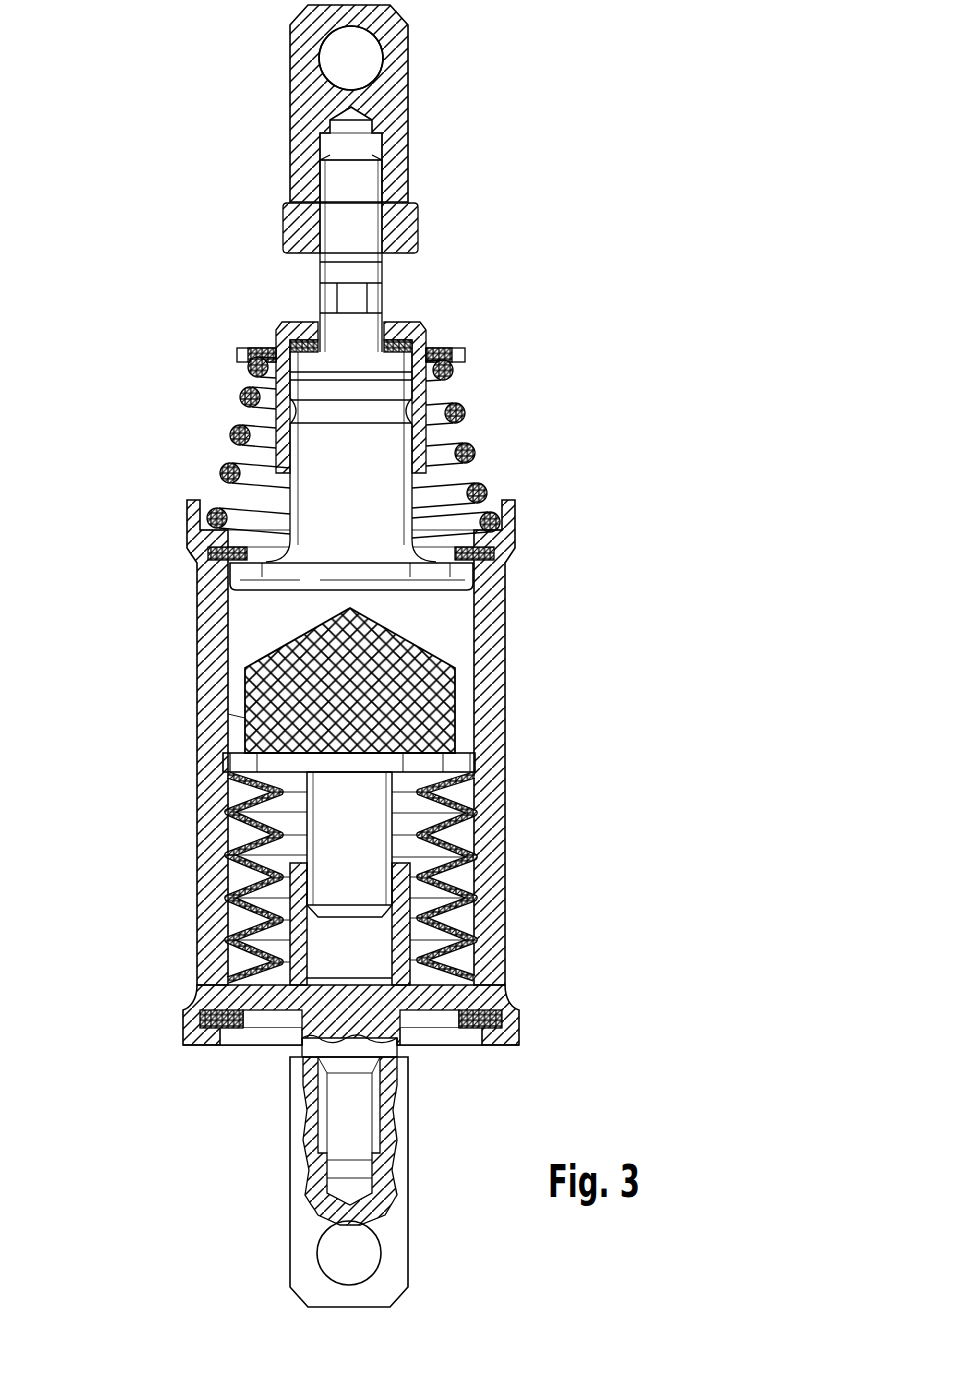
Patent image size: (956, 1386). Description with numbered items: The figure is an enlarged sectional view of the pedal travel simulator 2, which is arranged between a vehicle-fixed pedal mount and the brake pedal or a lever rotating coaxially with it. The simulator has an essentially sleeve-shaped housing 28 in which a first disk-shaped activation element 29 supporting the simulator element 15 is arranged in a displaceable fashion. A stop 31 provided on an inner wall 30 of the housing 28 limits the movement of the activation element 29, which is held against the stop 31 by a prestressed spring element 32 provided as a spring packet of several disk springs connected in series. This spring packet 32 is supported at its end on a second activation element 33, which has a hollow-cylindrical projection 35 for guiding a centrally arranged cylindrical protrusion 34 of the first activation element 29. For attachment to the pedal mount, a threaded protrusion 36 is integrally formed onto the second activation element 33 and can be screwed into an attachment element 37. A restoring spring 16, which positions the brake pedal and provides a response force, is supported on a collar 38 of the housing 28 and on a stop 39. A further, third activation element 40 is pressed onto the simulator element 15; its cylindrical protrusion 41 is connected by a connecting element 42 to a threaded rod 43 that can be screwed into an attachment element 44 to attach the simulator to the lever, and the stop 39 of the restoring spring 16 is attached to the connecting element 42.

The pedal travel simulator 2 is at (190, 195).
The simulator element 15 is at (420, 693).
The restoring spring 16 is at (480, 451).
The housing 28 is at (496, 824).
The first activation element 29 is at (466, 766).
The inner wall 30 is at (455, 622).
The stop 31 is at (226, 765).
The spring element 32 is at (440, 879).
The second activation element 33 is at (446, 999).
The cylindrical protrusion 34 is at (326, 848).
The hollow-cylindrical projection 35 is at (300, 931).
The threaded protrusion 36 is at (342, 1119).
The attachment element 37 is at (310, 1231).
The collar 38 is at (478, 539).
The stop 39 is at (430, 336).
The third activation element 40 is at (248, 576).
The cylindrical protrusion 41 is at (305, 458).
The connecting element 42 is at (420, 391).
The threaded rod 43 is at (360, 237).
The attachment element 44 is at (380, 94).